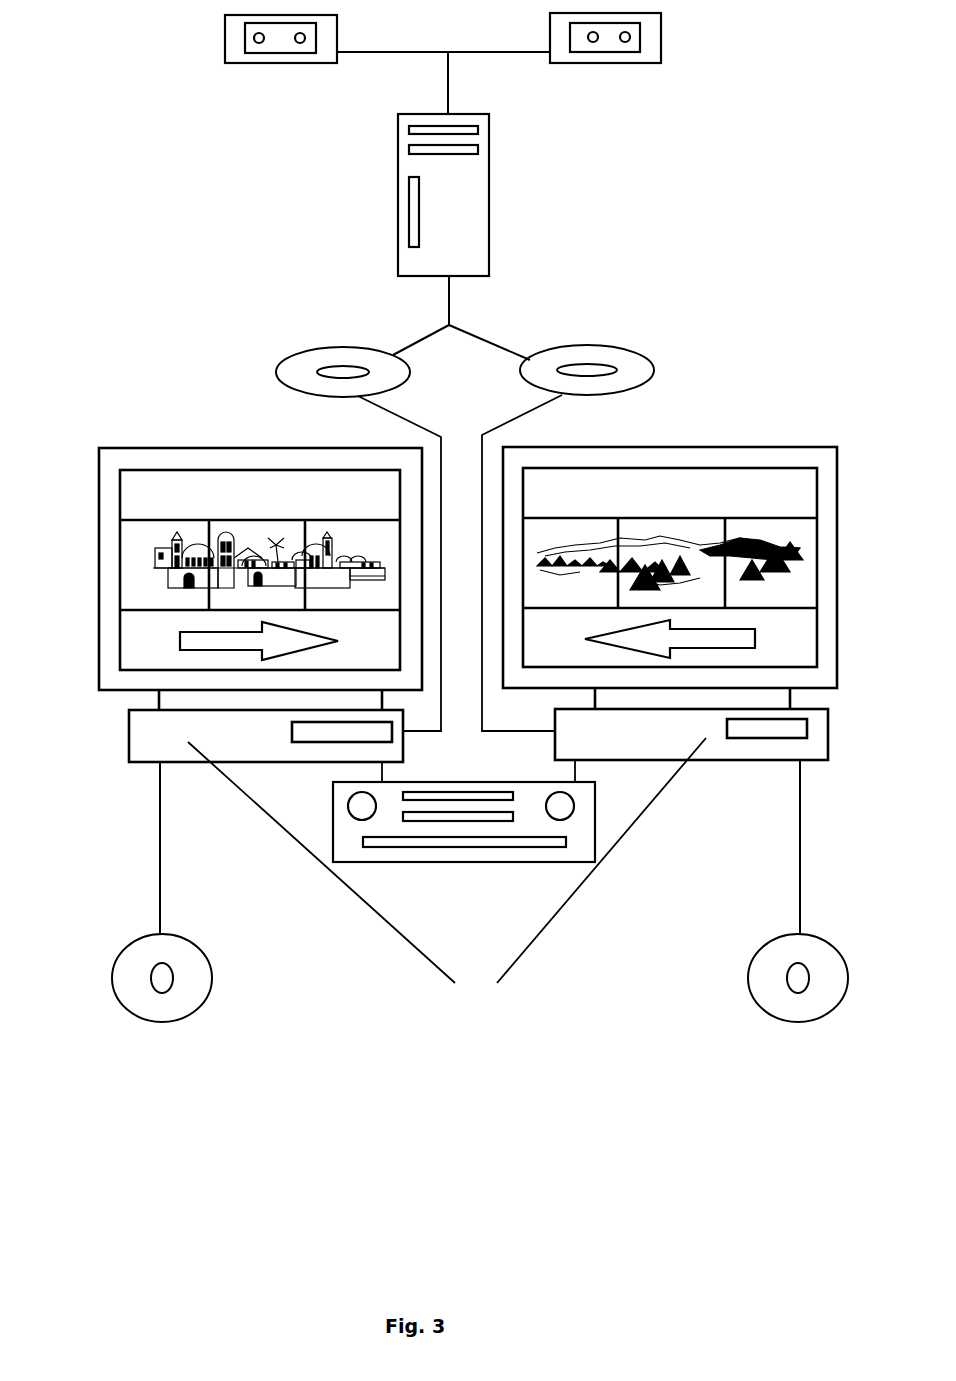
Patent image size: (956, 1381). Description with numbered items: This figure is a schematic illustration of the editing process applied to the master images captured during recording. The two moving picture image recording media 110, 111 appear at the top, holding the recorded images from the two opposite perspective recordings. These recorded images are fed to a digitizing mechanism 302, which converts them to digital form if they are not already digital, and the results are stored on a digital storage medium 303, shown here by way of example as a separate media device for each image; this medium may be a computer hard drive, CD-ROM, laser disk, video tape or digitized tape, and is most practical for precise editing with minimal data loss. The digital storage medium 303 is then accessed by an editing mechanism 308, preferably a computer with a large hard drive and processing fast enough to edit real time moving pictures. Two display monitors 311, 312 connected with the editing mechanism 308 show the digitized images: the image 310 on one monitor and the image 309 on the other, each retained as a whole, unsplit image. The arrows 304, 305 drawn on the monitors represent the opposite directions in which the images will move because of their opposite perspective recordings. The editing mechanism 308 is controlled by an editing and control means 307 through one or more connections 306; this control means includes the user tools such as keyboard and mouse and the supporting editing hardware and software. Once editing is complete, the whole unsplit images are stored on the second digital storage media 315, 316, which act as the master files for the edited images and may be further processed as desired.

The moving picture image recording medium 110 is at (338, 32).
The moving picture image recording medium 111 is at (550, 32).
The digitizing mechanism 302 is at (398, 196).
The digital storage medium 303 is at (527, 367).
The arrow 304 is at (717, 639).
The arrow 305 is at (228, 640).
The connections 306 is at (573, 771).
The editing and control means 307 is at (444, 862).
The editing mechanism 308 is at (447, 871).
The image 309 is at (683, 557).
The image 310 is at (128, 570).
The display monitor 311 is at (837, 558).
The display monitor 312 is at (98, 652).
The second digital storage medium 315 is at (160, 1024).
The second digital storage medium 316 is at (797, 1024).